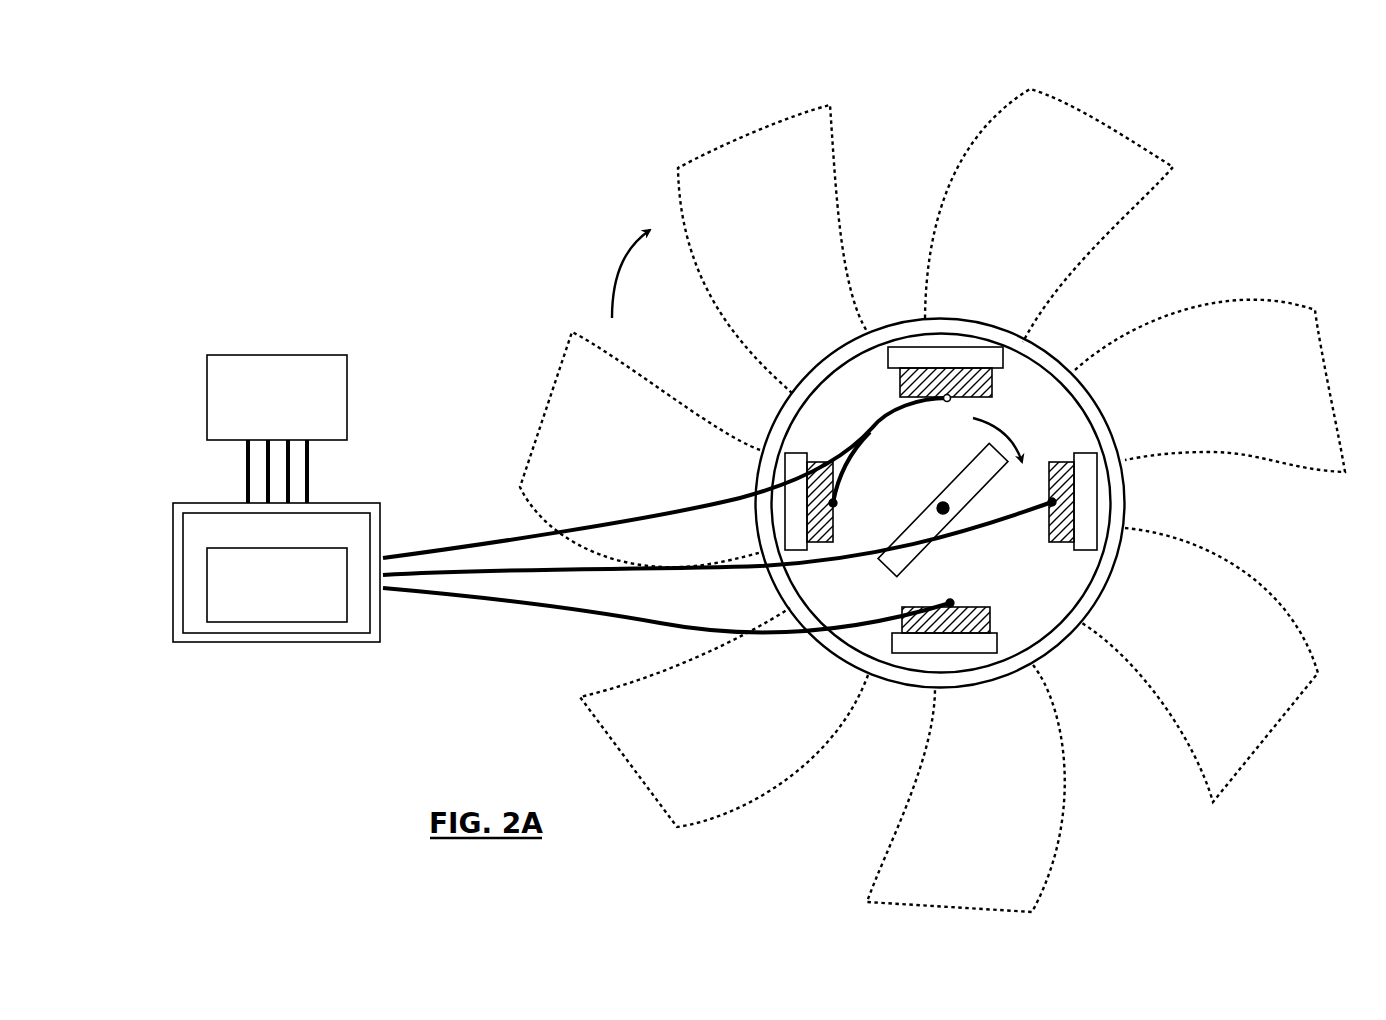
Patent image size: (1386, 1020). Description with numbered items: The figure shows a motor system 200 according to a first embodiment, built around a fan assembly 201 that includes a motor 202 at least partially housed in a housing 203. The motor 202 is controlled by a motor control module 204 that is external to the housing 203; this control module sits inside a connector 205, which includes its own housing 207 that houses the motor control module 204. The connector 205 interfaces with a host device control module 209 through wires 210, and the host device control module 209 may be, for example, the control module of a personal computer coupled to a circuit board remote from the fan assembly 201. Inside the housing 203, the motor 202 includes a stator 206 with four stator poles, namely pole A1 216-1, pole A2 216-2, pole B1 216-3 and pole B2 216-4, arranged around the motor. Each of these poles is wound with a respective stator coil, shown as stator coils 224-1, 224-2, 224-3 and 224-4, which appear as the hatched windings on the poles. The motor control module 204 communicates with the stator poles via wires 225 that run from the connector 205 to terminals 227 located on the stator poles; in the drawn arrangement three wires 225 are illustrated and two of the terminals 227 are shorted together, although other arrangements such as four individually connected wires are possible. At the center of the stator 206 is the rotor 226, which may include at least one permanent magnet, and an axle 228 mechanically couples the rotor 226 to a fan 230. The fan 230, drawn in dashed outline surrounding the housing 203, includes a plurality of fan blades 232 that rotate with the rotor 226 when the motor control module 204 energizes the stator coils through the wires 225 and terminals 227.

The motor system 200 is at (598, 108).
The fan assembly 201 is at (754, 411).
The motor 202 is at (1034, 374).
The housing 203 is at (852, 343).
The motor control module 204 is at (277, 622).
The connector 205 is at (361, 503).
The stator 206 is at (787, 597).
The housing 207 is at (364, 642).
The host device control module 209 is at (275, 355).
The wires 210 is at (247, 480).
The pole A1 216-1 is at (888, 368).
The pole A2 216-2 is at (997, 635).
The pole B1 216-3 is at (795, 453).
The pole B2 216-4 is at (1085, 453).
The stator coil 224-1 is at (993, 383).
The stator coil 224-2 is at (903, 610).
The stator coil 224-3 is at (834, 517).
The stator coil 224-4 is at (1055, 542).
The wires 225 is at (458, 542).
The rotor 226 is at (920, 561).
The terminals 227 is at (947, 401).
The axle 228 is at (938, 508).
The fan 230 is at (932, 177).
The fan blades 232 is at (1165, 156).